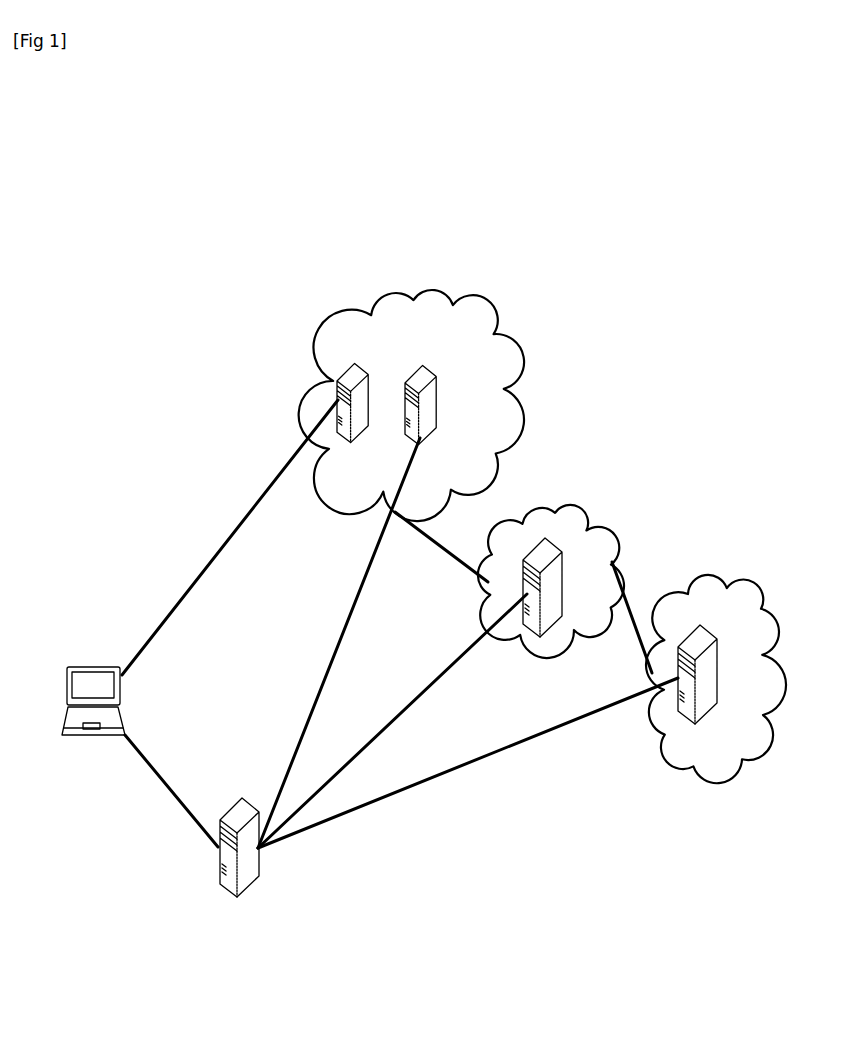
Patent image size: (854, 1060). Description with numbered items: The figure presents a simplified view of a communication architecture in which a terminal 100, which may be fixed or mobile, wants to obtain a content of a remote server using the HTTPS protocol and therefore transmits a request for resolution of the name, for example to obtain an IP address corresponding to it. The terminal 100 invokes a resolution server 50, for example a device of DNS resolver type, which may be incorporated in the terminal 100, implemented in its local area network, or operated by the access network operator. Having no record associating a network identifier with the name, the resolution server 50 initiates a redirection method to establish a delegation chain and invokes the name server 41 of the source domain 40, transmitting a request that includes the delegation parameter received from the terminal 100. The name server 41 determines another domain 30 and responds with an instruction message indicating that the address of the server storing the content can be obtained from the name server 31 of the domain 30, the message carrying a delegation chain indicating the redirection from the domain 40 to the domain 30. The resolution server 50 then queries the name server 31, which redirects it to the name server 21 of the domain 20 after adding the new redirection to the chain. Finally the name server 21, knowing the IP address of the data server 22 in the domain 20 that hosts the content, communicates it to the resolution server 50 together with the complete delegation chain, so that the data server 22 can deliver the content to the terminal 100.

The domain 20 is at (433, 290).
The name server 21 is at (430, 363).
The data server 22 is at (356, 364).
The domain 30 is at (603, 518).
The name server 31 is at (557, 549).
The source domain 40 is at (723, 573).
The name server 41 is at (716, 637).
The resolution server 50 is at (222, 818).
The terminal 100 is at (70, 665).